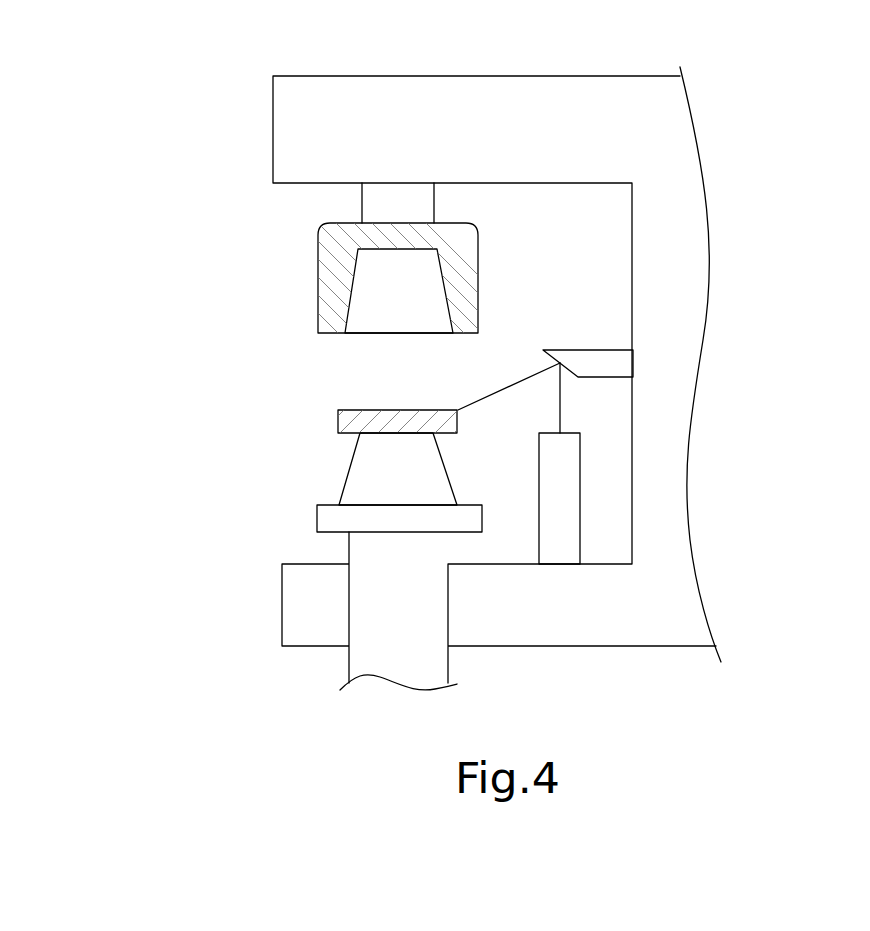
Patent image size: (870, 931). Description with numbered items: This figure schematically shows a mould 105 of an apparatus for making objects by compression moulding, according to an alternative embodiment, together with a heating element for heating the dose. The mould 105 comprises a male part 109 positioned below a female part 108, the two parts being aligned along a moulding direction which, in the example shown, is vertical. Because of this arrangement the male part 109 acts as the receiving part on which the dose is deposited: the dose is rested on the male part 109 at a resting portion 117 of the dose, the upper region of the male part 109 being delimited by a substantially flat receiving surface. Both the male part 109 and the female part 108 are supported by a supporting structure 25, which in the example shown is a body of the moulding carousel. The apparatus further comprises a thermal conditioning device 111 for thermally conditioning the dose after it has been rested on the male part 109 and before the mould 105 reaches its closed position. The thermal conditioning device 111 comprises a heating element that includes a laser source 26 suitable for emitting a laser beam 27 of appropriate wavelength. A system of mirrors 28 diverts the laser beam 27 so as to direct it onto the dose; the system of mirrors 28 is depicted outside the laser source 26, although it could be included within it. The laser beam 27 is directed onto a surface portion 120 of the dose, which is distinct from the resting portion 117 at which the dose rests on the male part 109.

The supporting structure 25 is at (680, 221).
The laser source 26 is at (580, 503).
The laser beam 27 is at (517, 383).
The system of mirrors 28 is at (608, 365).
The mould 105 is at (491, 378).
The female part 108 is at (317, 277).
The male part 109 is at (343, 486).
The thermal conditioning device 111 is at (585, 336).
The resting portion 117 is at (390, 435).
The surface portion 120 is at (458, 410).